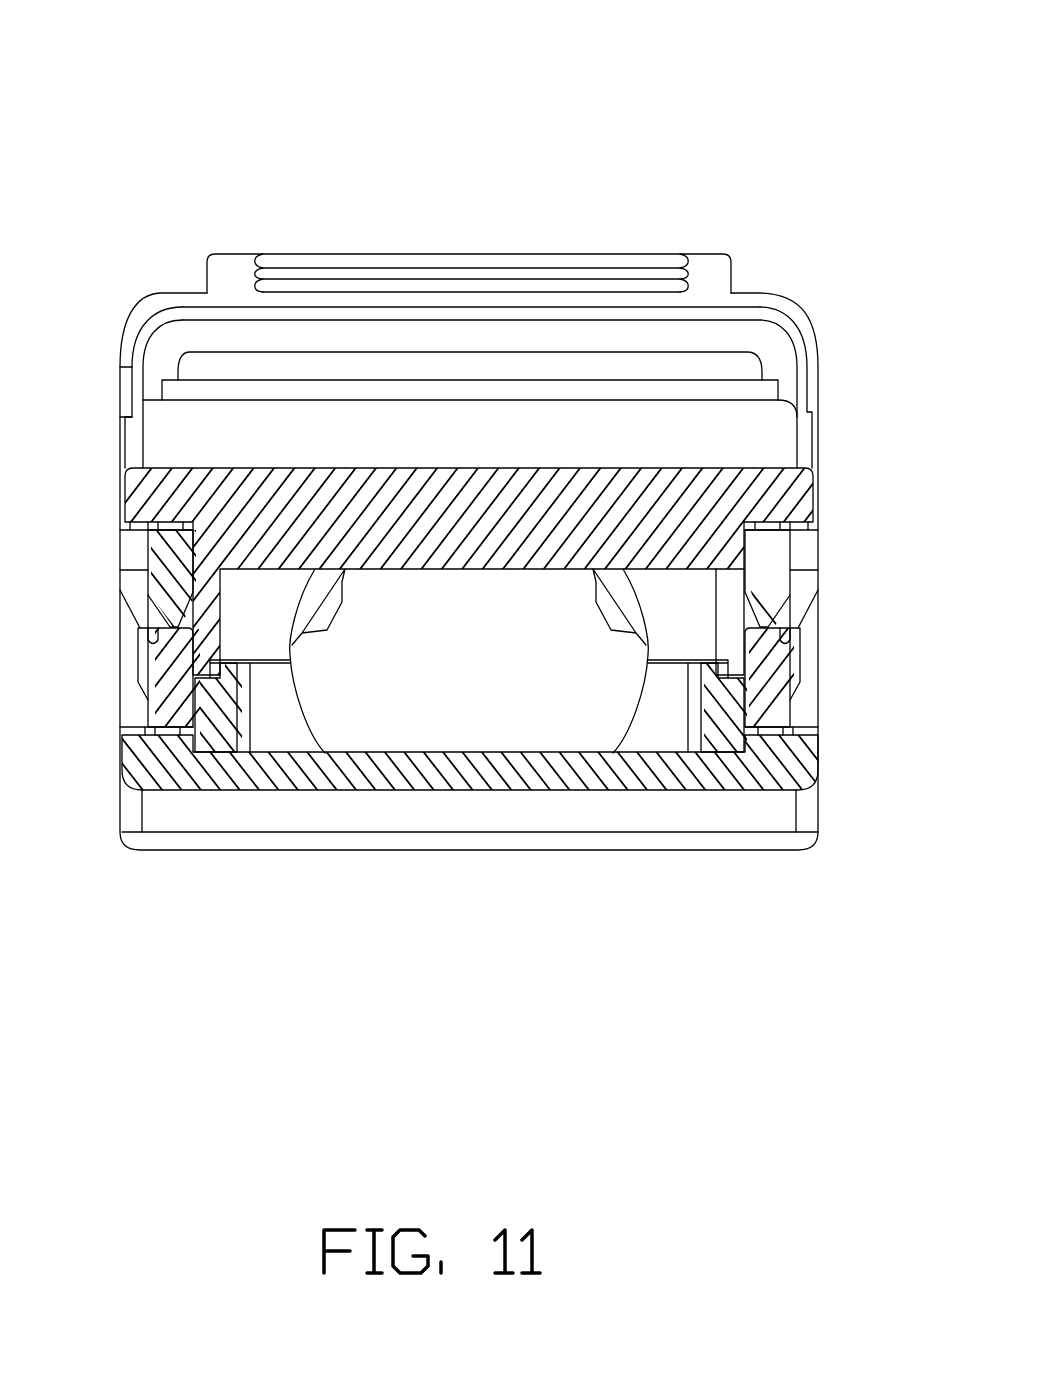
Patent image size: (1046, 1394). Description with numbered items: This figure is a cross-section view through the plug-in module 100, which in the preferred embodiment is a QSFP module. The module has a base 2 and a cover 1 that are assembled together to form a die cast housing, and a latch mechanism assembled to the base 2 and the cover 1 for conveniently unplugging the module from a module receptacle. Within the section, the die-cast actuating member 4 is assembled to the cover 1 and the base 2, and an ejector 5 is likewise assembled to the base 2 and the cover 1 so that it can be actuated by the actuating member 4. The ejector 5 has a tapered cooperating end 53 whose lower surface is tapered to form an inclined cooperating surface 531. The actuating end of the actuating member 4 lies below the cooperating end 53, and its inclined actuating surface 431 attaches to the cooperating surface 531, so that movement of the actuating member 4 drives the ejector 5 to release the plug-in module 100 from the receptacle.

The plug-in module 100 is at (441, 43).
The cover 1 is at (633, 522).
The base 2 is at (545, 773).
The actuating member 4 is at (772, 698).
The inclined actuating surface 431 is at (778, 652).
The ejector 5 is at (170, 574).
The cooperating end 53 is at (772, 562).
The inclined cooperating surface 531 is at (767, 622).